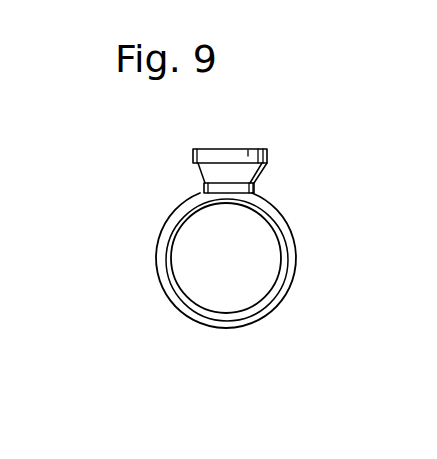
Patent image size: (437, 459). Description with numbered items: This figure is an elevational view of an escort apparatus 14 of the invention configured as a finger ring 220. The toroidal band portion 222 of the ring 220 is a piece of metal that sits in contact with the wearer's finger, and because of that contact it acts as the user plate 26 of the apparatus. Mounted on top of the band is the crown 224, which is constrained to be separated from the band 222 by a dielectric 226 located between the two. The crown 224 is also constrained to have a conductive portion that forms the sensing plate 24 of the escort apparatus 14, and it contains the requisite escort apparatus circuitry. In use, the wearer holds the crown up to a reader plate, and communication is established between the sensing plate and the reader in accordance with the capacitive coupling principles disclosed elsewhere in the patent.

The escort apparatus 14 is at (294, 171).
The sensing plate 24 is at (236, 148).
The user plate 26 is at (159, 277).
The finger ring 220 is at (226, 265).
The toroidal band portion 222 is at (170, 228).
The crown 224 is at (259, 171).
The dielectric 226 is at (254, 190).